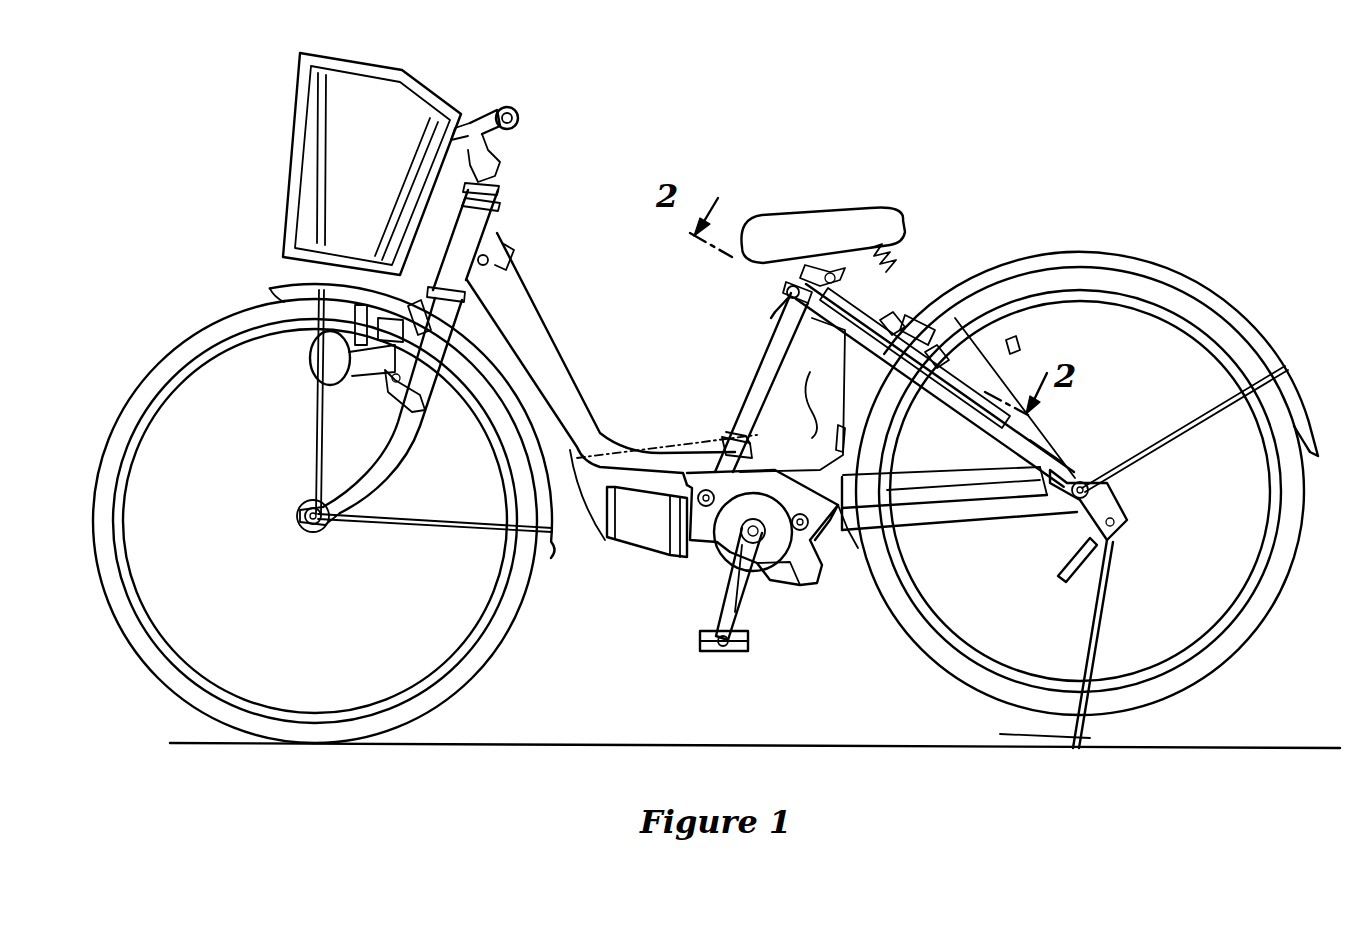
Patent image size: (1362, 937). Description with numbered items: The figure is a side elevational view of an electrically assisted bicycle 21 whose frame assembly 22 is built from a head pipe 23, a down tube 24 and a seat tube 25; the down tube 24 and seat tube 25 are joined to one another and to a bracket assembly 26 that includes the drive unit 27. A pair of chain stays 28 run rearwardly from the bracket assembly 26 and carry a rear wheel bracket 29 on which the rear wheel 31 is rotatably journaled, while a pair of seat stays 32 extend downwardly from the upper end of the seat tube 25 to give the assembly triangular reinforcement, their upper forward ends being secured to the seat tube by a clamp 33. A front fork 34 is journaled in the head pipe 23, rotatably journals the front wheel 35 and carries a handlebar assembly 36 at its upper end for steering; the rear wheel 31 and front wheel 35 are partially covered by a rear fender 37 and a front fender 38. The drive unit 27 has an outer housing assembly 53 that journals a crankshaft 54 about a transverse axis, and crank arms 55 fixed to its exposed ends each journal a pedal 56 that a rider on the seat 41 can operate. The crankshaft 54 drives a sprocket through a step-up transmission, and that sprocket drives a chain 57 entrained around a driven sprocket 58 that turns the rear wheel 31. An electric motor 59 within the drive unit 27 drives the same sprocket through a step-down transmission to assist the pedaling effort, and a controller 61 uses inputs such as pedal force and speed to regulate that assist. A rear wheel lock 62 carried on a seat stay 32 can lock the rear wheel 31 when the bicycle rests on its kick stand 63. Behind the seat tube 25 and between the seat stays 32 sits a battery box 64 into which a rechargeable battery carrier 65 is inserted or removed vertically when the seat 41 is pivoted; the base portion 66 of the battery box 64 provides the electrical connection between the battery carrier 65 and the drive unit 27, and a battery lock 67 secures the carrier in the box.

The bicycle 21 is at (994, 149).
The frame assembly 22 is at (818, 388).
The head pipe 23 is at (460, 250).
The down tube 24 is at (567, 376).
The seat tube 25 is at (776, 360).
The bracket assembly 26 is at (836, 556).
The drive unit 27 is at (645, 548).
The chain stays 28 is at (937, 510).
The rear wheel bracket 29 is at (1105, 490).
The rear wheel 31 is at (1270, 580).
The seat stays 32 is at (935, 385).
The clamp 33 is at (772, 305).
The front fork 34 is at (392, 450).
The front wheel 35 is at (138, 657).
The handlebar assembly 36 is at (495, 108).
The rear fender 37 is at (1256, 330).
The front fender 38 is at (545, 486).
The seat 41 is at (805, 232).
The outer housing assembly 53 is at (768, 585).
The crankshaft 54 is at (745, 538).
The crank arms 55 is at (746, 616).
The pedal 56 is at (732, 655).
The chain 57 is at (1000, 535).
The driven sprocket 58 is at (1102, 470).
The electric motor 59 is at (590, 510).
The controller 61 is at (795, 570).
The rear wheel lock 62 is at (922, 340).
The kick stand 63 is at (540, 538).
The battery box 64 is at (792, 407).
The rechargeable battery carrier 65 is at (992, 425).
The base portion 66 is at (816, 393).
The battery lock 67 is at (718, 437).